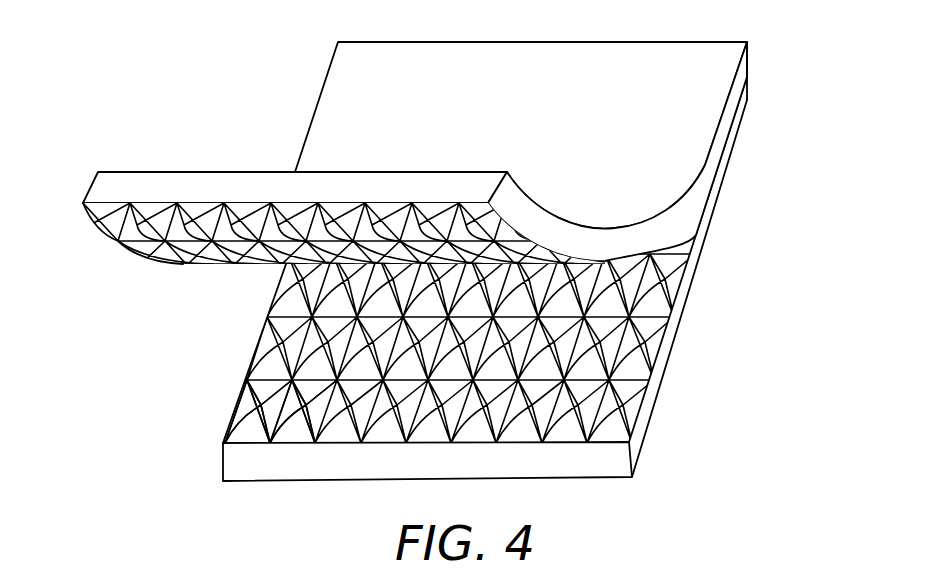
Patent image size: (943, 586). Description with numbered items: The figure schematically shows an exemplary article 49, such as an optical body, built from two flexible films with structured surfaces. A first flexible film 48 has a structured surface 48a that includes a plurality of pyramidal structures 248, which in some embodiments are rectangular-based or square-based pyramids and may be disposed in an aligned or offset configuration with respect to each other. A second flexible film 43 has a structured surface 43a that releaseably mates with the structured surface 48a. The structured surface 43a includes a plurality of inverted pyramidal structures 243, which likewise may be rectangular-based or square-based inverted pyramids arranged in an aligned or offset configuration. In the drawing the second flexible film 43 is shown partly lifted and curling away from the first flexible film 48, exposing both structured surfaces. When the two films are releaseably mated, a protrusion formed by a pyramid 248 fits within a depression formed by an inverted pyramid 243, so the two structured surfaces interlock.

The second flexible film 43 is at (167, 172).
The structured surface 43a is at (152, 265).
The inverted pyramidal structures 243 is at (117, 227).
The first flexible film 48 is at (647, 420).
The structured surface 48a is at (674, 344).
The pyramidal structures 248 is at (245, 403).
The article 49 is at (774, 238).